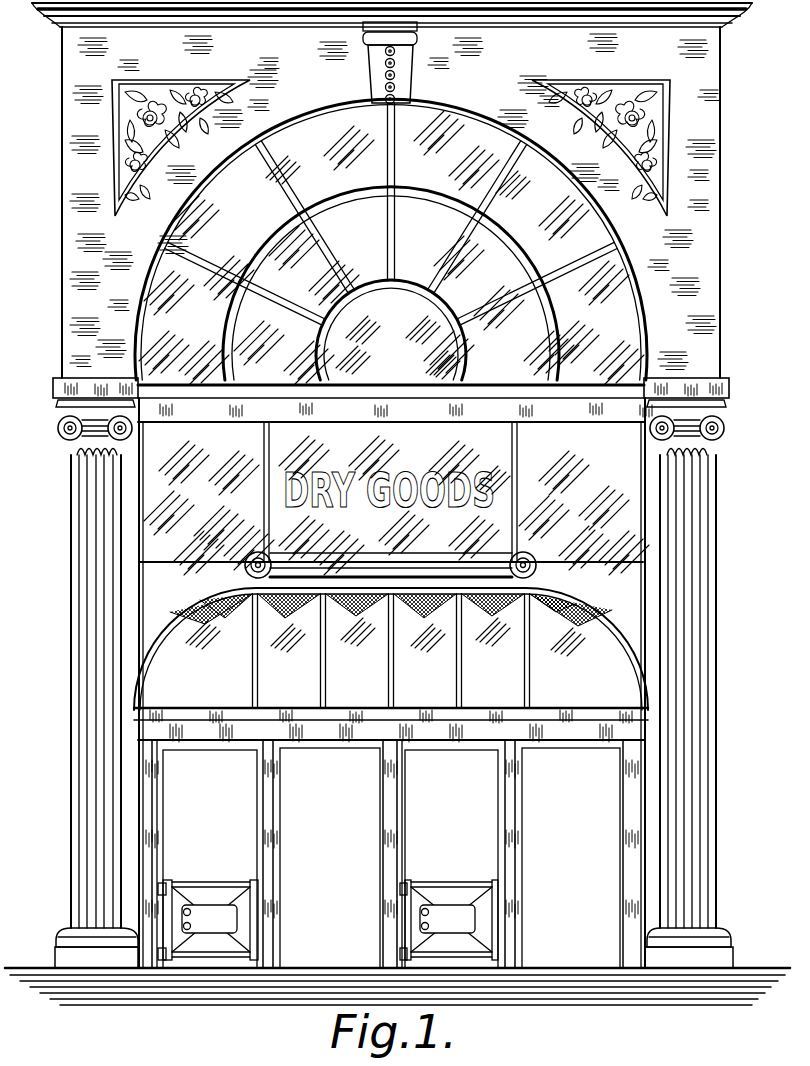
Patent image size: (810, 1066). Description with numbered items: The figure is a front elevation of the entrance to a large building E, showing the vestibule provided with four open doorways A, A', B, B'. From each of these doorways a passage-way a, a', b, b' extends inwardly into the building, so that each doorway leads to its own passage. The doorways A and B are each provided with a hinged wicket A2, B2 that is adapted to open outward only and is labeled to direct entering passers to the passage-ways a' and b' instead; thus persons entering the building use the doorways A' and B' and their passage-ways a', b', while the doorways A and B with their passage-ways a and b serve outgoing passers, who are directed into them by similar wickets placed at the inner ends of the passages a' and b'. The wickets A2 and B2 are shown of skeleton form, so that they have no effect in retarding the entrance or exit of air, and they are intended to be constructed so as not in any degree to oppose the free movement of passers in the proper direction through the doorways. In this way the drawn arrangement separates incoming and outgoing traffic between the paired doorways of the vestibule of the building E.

The doorway A is at (207, 854).
The doorway A' is at (328, 854).
The passage-way a is at (210, 859).
The passage-way a' is at (330, 858).
The hinged wicket A2 is at (208, 903).
The doorway B is at (451, 854).
The doorway B' is at (569, 854).
The passage-way b is at (451, 859).
The passage-way b' is at (571, 858).
The hinged wicket B2 is at (453, 882).
The large building E is at (391, 654).